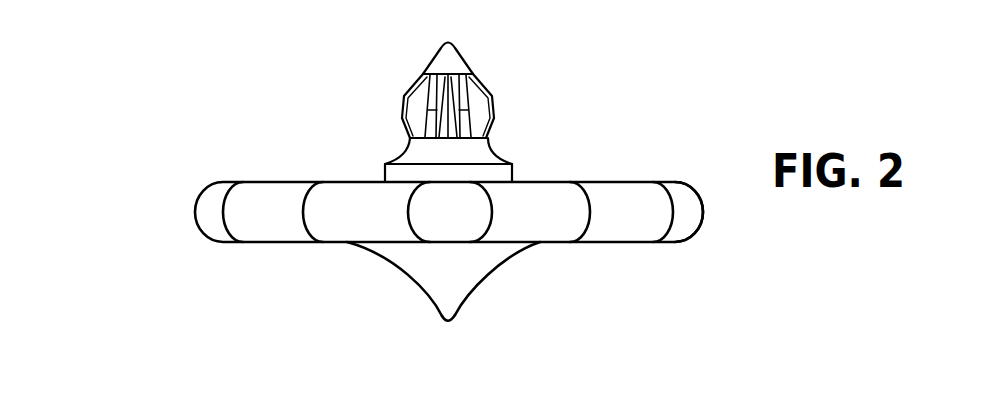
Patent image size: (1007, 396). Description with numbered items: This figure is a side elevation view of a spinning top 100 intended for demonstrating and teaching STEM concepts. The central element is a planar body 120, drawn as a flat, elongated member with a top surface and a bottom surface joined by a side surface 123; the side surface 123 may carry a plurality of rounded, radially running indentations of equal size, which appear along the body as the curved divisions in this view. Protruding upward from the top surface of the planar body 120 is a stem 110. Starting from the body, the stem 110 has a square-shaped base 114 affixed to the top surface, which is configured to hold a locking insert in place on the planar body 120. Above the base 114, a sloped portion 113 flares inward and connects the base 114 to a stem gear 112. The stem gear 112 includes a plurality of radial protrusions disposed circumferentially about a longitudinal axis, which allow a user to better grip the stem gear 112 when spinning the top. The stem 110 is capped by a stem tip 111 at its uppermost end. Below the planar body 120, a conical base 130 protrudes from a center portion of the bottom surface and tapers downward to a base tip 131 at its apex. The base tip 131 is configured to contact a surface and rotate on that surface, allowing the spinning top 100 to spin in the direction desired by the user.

The spinning top 100 is at (416, 186).
The stem 110 is at (435, 96).
The stem tip 111 is at (418, 32).
The stem gear 112 is at (376, 88).
The sloped portion 113 is at (372, 139).
The base 114 is at (361, 166).
The planar body 120 is at (416, 227).
The side surface 123 is at (688, 222).
The conical base 130 is at (395, 302).
The base tip 131 is at (434, 321).